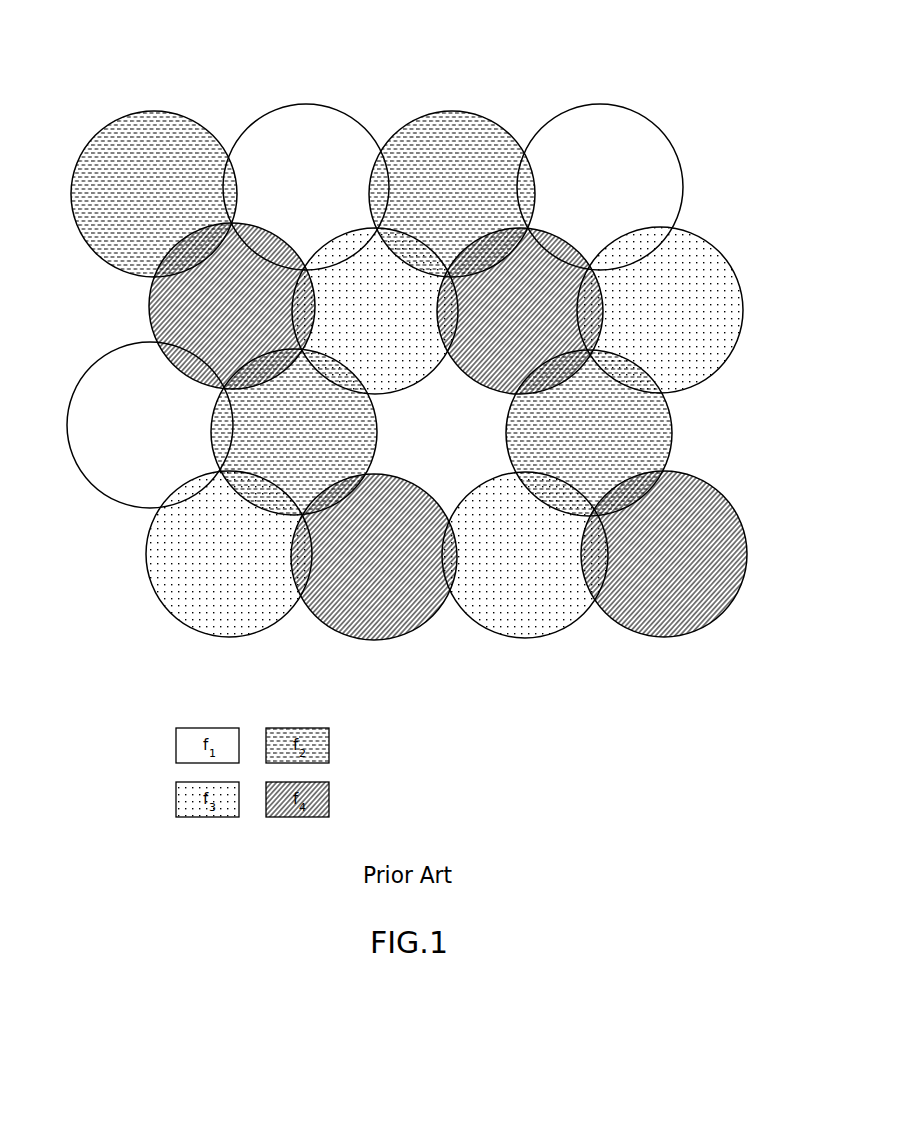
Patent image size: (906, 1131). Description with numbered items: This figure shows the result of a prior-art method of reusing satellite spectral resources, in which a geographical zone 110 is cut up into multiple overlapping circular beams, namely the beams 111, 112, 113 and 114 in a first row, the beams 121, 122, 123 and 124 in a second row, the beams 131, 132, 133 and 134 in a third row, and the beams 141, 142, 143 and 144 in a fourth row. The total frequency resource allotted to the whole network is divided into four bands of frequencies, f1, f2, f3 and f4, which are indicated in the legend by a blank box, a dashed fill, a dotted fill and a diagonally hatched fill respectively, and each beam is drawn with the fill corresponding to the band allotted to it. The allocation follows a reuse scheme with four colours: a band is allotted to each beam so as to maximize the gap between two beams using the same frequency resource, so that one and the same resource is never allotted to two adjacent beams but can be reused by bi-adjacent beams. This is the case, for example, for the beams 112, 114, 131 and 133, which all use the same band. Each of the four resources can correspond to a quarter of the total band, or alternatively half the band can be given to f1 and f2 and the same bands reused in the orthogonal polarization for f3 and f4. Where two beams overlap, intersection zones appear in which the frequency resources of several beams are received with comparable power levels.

The geographical zone 110 is at (175, 72).
The beam 111 is at (102, 128).
The beam 112 is at (267, 113).
The beam 113 is at (410, 117).
The beam 114 is at (555, 117).
The beam 121 is at (148, 299).
The beam 122 is at (290, 320).
The beam 123 is at (607, 302).
The beam 124 is at (722, 260).
The beam 131 is at (70, 457).
The beam 132 is at (213, 442).
The beam 133 is at (523, 442).
The beam 134 is at (668, 412).
The beam 141 is at (160, 607).
The beam 142 is at (320, 620).
The beam 143 is at (470, 627).
The beam 144 is at (622, 628).